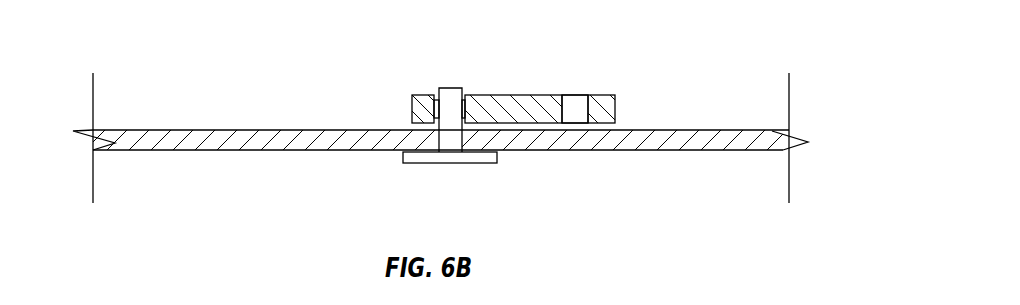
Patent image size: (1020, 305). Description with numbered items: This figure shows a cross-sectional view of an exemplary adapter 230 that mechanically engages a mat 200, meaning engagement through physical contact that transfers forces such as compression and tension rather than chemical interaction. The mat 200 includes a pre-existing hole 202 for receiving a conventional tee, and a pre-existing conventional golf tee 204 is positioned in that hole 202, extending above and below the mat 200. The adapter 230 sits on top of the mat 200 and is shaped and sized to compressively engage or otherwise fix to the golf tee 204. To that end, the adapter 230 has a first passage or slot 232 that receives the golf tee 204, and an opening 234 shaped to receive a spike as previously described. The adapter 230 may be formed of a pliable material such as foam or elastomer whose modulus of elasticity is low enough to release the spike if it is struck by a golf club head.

The mat 200 is at (650, 150).
The hole 202 is at (442, 135).
The golf tee 204 is at (468, 163).
The adapter 230 is at (598, 94).
The slot 232 is at (464, 93).
The opening 234 is at (571, 100).